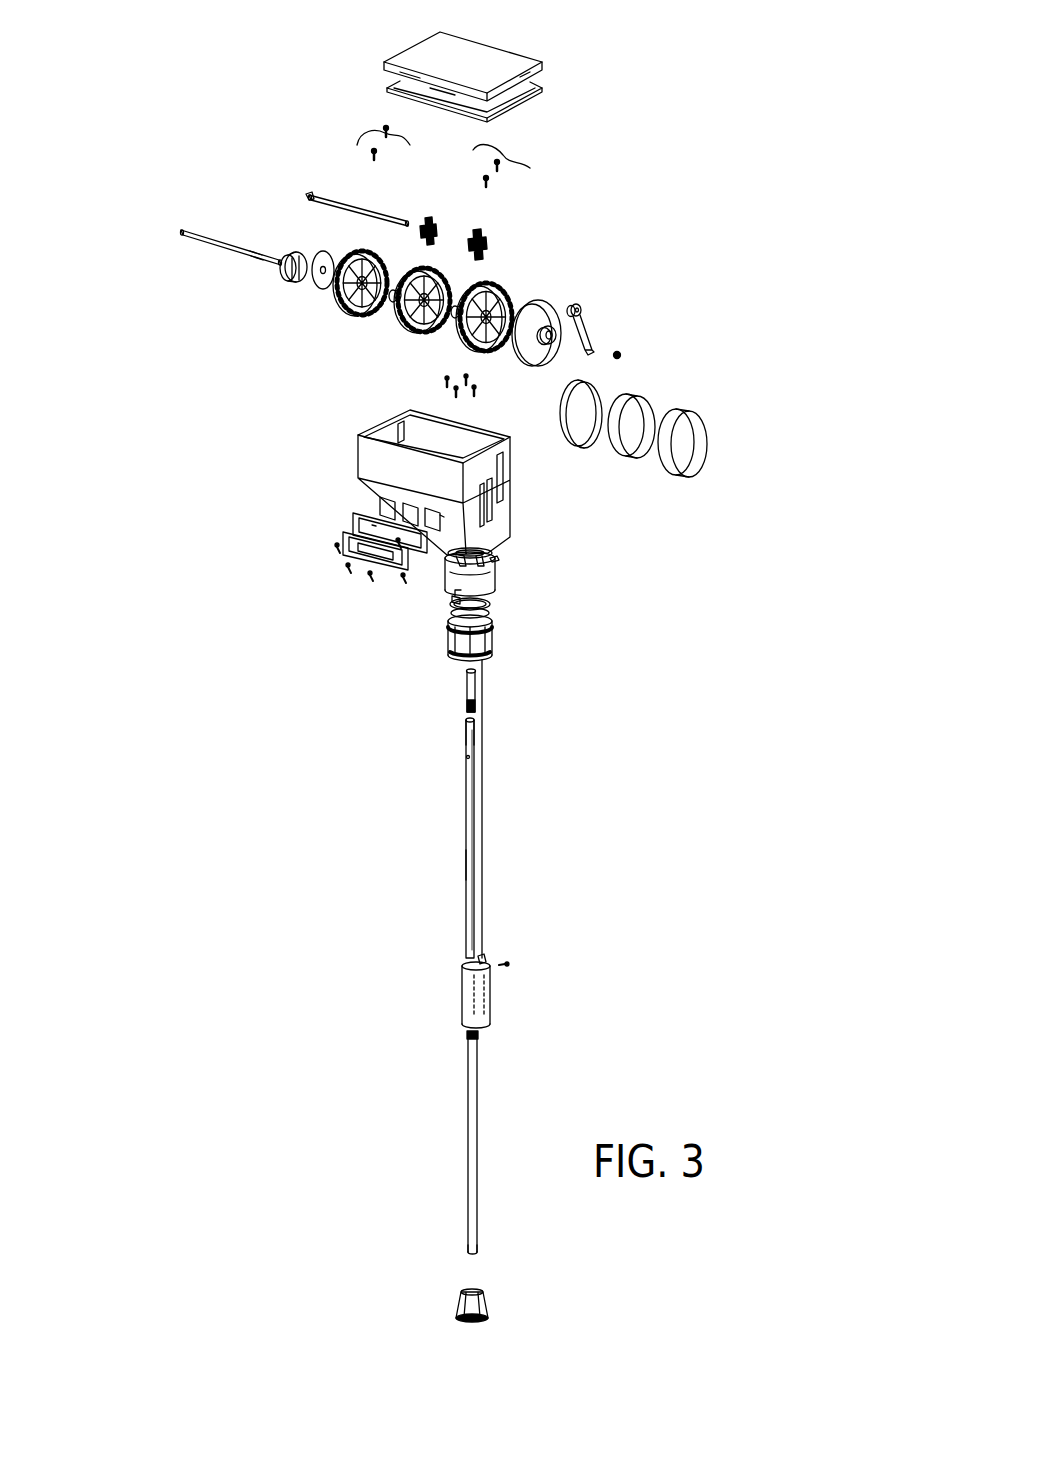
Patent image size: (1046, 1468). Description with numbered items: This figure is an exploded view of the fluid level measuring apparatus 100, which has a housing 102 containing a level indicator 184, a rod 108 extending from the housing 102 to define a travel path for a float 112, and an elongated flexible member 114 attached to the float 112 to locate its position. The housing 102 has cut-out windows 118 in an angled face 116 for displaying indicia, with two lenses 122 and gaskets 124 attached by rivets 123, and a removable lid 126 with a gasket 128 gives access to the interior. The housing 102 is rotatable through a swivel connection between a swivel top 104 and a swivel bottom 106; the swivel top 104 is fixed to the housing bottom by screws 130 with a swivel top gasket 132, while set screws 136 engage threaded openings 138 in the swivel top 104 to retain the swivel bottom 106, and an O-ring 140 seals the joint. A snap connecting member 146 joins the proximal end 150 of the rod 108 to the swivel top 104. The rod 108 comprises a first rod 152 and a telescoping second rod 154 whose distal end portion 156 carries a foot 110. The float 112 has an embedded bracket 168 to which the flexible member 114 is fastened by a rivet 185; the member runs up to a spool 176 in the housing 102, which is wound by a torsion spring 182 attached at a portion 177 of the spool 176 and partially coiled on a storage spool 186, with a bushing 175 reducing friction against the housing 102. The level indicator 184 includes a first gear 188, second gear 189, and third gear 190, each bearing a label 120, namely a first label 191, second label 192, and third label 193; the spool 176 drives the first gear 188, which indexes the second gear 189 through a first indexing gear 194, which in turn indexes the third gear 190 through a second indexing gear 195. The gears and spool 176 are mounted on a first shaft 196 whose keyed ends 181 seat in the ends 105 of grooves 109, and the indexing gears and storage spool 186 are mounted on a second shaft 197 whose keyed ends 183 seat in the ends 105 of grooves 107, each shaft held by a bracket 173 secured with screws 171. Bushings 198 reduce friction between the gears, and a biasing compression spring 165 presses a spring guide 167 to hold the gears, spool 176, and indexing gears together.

The fluid level measuring apparatus 100 is at (640, 853).
The housing 102 is at (348, 462).
The swivel top 104 is at (500, 581).
The ends of grooves 105 is at (408, 432).
The swivel bottom 106 is at (491, 640).
The grooves 107 is at (506, 470).
The rod 108 is at (456, 929).
The grooves 109 is at (506, 494).
The foot 110 is at (489, 1315).
The float 112 is at (491, 1003).
The elongated flexible member 114 is at (471, 838).
The angled face 116 is at (362, 497).
The cut-out windows 118 is at (430, 500).
The label 120 is at (705, 388).
The lenses 122 is at (353, 515).
The rivets 123 is at (368, 578).
The gaskets 124 is at (428, 568).
The removable lid 126 is at (528, 56).
The gasket 128 is at (387, 90).
The screws 130 is at (438, 375).
The swivel top gasket 132 is at (476, 554).
The set screws 136 is at (497, 576).
The threaded openings 138 is at (488, 600).
The O-ring 140 is at (485, 613).
The snap connecting member 146 is at (455, 712).
The proximal end 150 is at (476, 742).
The first rod 152 is at (466, 870).
The second rod 154 is at (467, 1143).
The distal end portion 156 is at (478, 1252).
The biasing compression spring 165 is at (289, 278).
The spring guide 167 is at (325, 251).
The bracket 168 is at (487, 958).
The screws 171 is at (439, 152).
The bracket 173 is at (358, 140).
The bushing 175 is at (621, 357).
The spool 176 is at (553, 292).
The portion of the spool 177 is at (556, 345).
The keyed ends 181 is at (196, 257).
The torsion spring 182 is at (612, 318).
The keyed ends 183 is at (308, 197).
The level indicator 184 is at (318, 322).
The rivet 185 is at (511, 966).
The storage spool 186 is at (582, 307).
The first gear 188 is at (500, 295).
The second gear 189 is at (405, 331).
The third gear 190 is at (350, 314).
The first label 191 is at (663, 468).
The second label 192 is at (615, 455).
The third label 193 is at (561, 412).
The first indexing gear 194 is at (483, 236).
The second indexing gear 195 is at (436, 222).
The first shaft 196 is at (252, 253).
The second shaft 197 is at (373, 205).
The bushings 198 is at (393, 290).